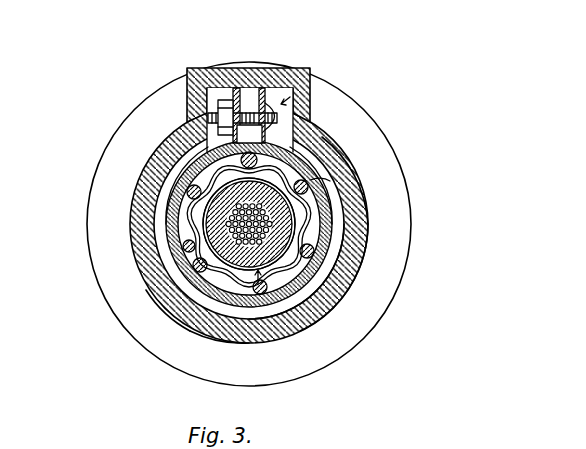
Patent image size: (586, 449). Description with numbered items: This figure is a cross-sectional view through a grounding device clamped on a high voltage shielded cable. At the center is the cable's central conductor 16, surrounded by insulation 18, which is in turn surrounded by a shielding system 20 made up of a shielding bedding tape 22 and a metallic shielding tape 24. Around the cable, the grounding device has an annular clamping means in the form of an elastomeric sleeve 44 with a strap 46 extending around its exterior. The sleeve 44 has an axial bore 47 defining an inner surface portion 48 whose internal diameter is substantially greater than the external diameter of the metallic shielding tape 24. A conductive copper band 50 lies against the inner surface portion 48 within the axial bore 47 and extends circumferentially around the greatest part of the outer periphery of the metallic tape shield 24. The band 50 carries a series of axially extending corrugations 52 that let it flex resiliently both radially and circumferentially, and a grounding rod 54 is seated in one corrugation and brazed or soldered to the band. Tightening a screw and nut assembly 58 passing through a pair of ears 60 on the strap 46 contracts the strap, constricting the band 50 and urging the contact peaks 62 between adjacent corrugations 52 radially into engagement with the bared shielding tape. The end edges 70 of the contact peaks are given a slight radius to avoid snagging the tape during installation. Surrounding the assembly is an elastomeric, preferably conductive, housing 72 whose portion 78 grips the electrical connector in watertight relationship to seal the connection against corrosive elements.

The central conductor 16 is at (165, 295).
The insulation 18 is at (178, 312).
The shielding system 20 is at (198, 322).
The shielding bedding tape 22 is at (303, 237).
The metallic shielding tape 24 is at (328, 178).
The sleeve 44 is at (323, 197).
The strap 46 is at (322, 140).
The axial bore 47 is at (290, 257).
The inner surface portion 48 is at (300, 340).
The band 50 is at (168, 180).
The corrugations 52 is at (313, 215).
The grounding rod 54 is at (178, 138).
The screw and nut assembly 58 is at (303, 84).
The ears 60 is at (246, 98).
The contact peaks 62 is at (202, 225).
The end edges 70 is at (360, 305).
The housing 72 is at (340, 152).
The portion 78 is at (398, 283).